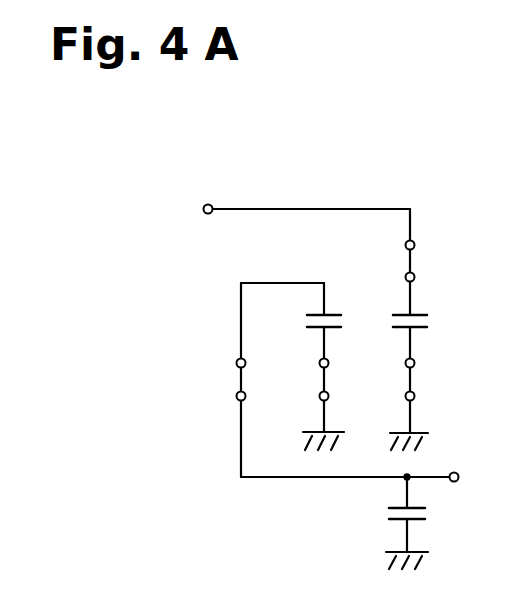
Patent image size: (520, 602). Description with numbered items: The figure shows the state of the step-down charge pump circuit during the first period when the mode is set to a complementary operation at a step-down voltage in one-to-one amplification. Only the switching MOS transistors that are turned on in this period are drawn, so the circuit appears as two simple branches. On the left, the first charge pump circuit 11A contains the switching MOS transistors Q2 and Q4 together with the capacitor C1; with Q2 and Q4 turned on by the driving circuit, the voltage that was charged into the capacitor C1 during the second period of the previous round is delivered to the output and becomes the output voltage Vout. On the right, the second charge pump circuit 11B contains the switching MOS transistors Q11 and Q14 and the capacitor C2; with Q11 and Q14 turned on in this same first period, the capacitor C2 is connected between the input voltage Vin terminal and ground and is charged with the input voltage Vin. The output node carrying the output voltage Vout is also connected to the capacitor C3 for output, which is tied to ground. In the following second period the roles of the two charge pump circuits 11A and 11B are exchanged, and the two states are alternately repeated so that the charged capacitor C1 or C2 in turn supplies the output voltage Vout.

The first charge pump circuit 11A is at (258, 277).
The second charge pump circuit 11B is at (396, 204).
The switching MOS transistor Q2 is at (255, 380).
The switching MOS transistor Q4 is at (339, 380).
The switching MOS transistor Q11 is at (430, 261).
The switching MOS transistor Q14 is at (430, 380).
The capacitor C1 is at (340, 323).
The capacitor C2 is at (425, 323).
The capacitor for output C3 is at (420, 523).
The input voltage Vin is at (287, 211).
The output voltage Vout is at (477, 480).